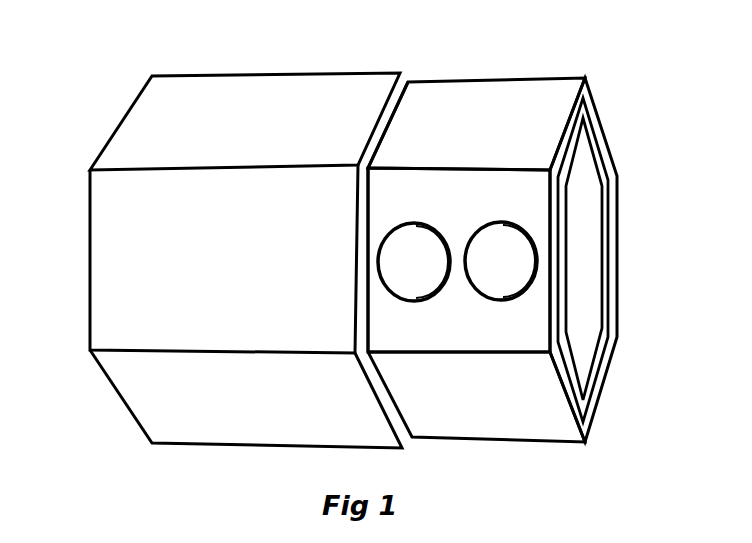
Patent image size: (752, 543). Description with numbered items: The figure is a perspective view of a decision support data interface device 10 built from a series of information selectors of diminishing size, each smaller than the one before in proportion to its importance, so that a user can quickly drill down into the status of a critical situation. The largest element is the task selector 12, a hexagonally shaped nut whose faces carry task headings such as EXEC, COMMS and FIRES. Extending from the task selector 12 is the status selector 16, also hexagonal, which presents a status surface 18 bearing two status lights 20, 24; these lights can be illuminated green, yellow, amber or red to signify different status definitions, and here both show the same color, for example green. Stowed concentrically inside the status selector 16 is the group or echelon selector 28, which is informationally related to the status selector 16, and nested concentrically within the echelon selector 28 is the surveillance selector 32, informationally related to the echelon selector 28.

The decision support data interface device 10 is at (653, 65).
The task selector 12 is at (90, 170).
The status selector 16 is at (518, 80).
The status surface 18 is at (459, 260).
The status light 20 is at (410, 242).
The status light 24 is at (507, 283).
The echelon selector 28 is at (600, 115).
The surveillance selector 32 is at (606, 213).